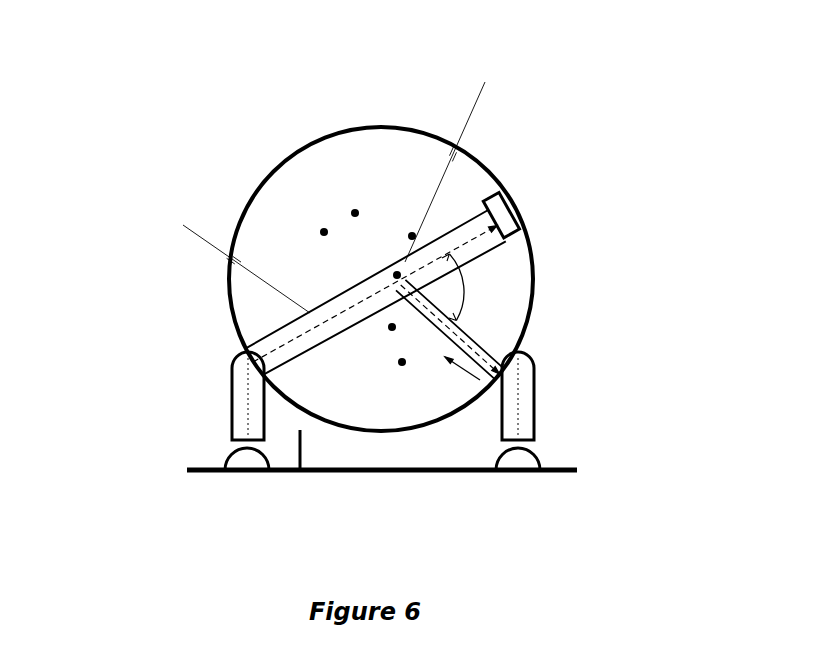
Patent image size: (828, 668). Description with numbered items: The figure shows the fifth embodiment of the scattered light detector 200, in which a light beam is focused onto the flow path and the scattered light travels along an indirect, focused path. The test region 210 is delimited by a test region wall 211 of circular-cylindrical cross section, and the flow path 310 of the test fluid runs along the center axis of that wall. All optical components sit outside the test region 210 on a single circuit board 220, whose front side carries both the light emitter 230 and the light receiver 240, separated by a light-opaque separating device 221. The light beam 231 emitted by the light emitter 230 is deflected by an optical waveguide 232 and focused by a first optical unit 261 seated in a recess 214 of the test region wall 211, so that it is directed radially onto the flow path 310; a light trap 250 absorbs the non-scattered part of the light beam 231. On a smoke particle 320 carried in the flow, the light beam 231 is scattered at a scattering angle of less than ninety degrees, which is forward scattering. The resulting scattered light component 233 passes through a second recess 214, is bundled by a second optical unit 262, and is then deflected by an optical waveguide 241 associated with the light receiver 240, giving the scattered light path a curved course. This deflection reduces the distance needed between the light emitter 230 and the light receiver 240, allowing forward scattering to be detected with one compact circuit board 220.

The scattered light detector 200 is at (553, 108).
The test region 210 is at (282, 209).
The test region wall 211 is at (277, 165).
The flow path 310 is at (370, 171).
The smoke particle 320 is at (395, 272).
The light beam 231 is at (332, 300).
The light trap 250 is at (510, 193).
The scattered light component 233 is at (477, 330).
The recess 214 is at (518, 348).
The first optical unit 261 is at (243, 352).
The second optical unit 262 is at (522, 352).
The optical waveguide 232 is at (232, 403).
The optical waveguide 241 is at (538, 368).
The light emitter 230 is at (208, 473).
The light receiver 240 is at (542, 473).
The circuit board 220 is at (430, 472).
The separating device 221 is at (302, 450).